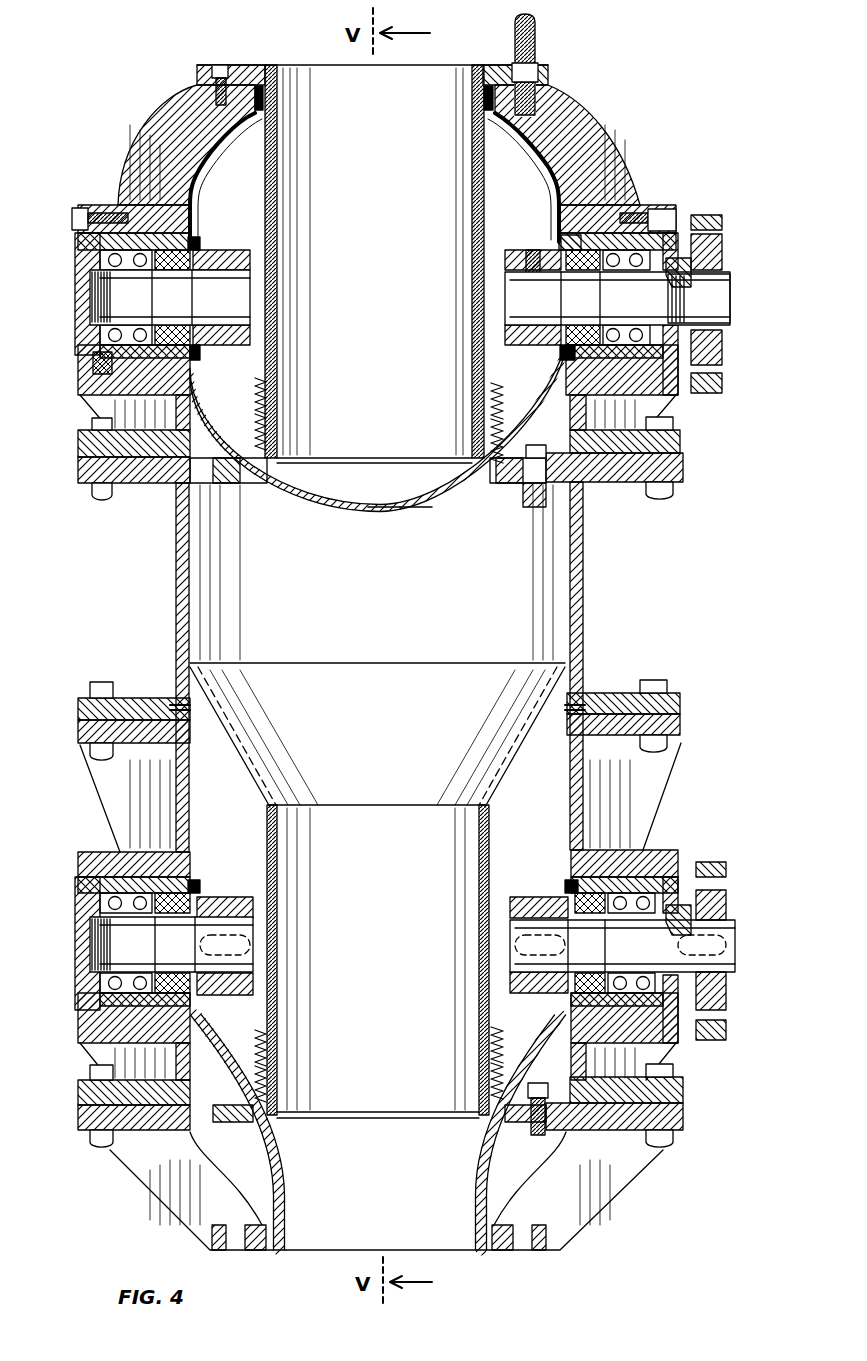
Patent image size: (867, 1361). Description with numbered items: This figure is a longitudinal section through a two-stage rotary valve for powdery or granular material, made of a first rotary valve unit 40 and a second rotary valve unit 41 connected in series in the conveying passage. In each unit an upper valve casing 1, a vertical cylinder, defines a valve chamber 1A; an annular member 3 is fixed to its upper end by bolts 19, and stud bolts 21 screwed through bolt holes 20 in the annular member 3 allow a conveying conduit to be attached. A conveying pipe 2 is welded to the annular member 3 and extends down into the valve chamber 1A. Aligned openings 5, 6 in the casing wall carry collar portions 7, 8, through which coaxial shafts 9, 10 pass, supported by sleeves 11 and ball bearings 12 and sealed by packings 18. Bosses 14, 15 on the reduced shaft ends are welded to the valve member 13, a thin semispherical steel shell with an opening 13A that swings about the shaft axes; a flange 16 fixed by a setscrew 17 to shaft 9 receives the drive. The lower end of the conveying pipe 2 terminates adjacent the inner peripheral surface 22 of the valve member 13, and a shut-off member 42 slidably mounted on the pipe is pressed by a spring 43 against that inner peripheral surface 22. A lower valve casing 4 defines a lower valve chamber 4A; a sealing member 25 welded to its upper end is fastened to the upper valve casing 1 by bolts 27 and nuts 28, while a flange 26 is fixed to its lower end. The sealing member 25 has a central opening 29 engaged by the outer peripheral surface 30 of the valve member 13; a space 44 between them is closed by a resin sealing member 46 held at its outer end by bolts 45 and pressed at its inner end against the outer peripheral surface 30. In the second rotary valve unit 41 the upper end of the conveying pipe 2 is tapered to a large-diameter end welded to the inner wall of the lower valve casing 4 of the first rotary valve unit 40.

The upper valve casing 1 is at (538, 136).
The valve chamber 1A is at (210, 178).
The conveying pipe 2 is at (265, 181).
The annular member 3 is at (497, 65).
The lower valve casing 4 is at (178, 586).
The lower valve chamber 4A is at (548, 578).
The opening 5 is at (563, 240).
The opening 6 is at (194, 250).
The collar portion 7 is at (610, 205).
The collar portion 8 is at (135, 205).
The shaft 9 is at (730, 301).
The shaft 10 is at (100, 287).
The sleeve 11 is at (92, 246).
The ball bearing 12 is at (93, 364).
The valve member 13 is at (352, 512).
The opening 13A is at (356, 1120).
The boss 14 is at (515, 250).
The boss 15 is at (222, 250).
The flange 16 is at (722, 222).
The setscrew 17 is at (699, 298).
The packing 18 is at (193, 355).
The bolt 19 is at (221, 65).
The bolt hole 20 is at (540, 64).
The stud bolt 21 is at (537, 26).
The inner peripheral surface 22 is at (397, 505).
The sealing member 25 is at (600, 483).
The flange 26 is at (605, 693).
The bolt 27 is at (95, 425).
The nut 28 is at (95, 492).
The central opening 29 is at (245, 486).
The outer peripheral surface 30 is at (414, 511).
The first rotary valve unit 40 is at (125, 146).
The second rotary valve unit 41 is at (70, 797).
The shut-off member 42 is at (503, 448).
The spring 43 is at (503, 400).
The space 44 is at (490, 486).
The bolt 45 is at (547, 432).
The sealing member 46 is at (526, 486).